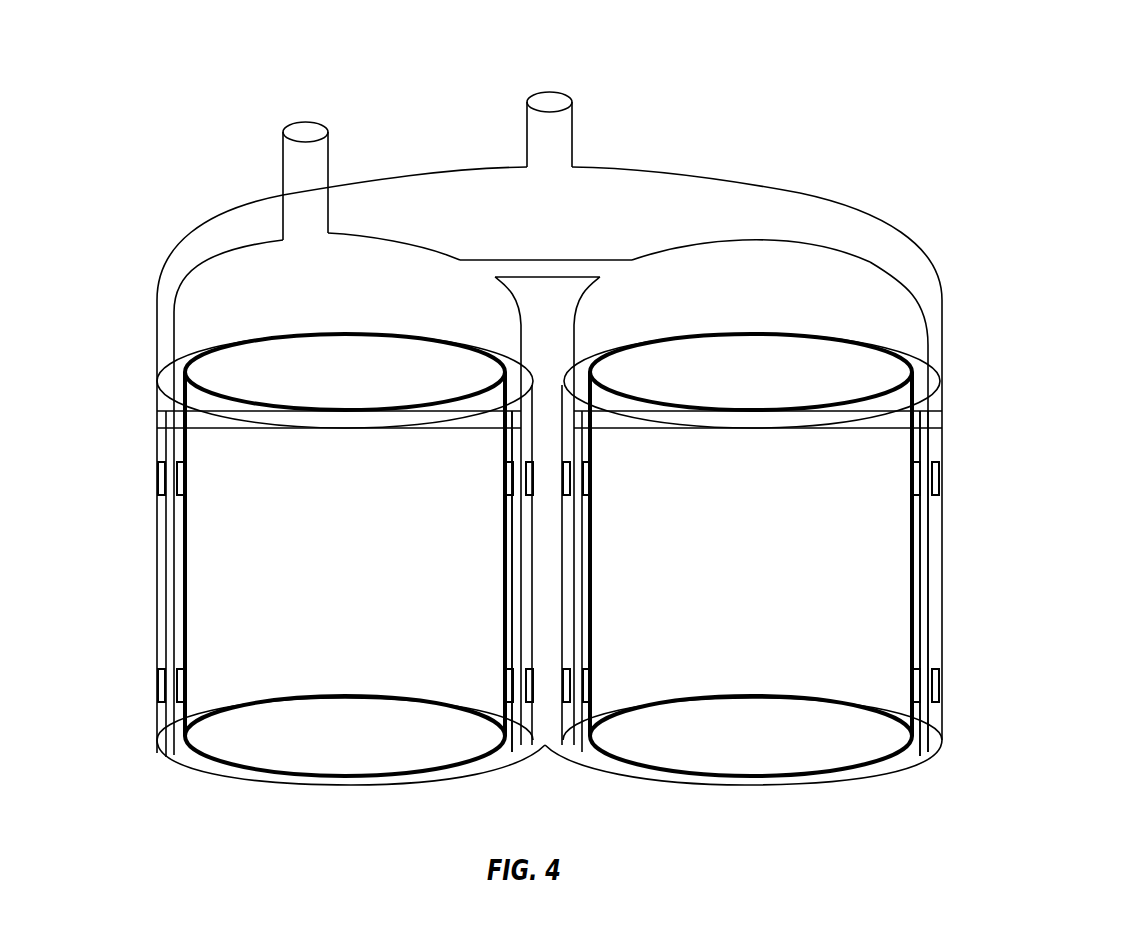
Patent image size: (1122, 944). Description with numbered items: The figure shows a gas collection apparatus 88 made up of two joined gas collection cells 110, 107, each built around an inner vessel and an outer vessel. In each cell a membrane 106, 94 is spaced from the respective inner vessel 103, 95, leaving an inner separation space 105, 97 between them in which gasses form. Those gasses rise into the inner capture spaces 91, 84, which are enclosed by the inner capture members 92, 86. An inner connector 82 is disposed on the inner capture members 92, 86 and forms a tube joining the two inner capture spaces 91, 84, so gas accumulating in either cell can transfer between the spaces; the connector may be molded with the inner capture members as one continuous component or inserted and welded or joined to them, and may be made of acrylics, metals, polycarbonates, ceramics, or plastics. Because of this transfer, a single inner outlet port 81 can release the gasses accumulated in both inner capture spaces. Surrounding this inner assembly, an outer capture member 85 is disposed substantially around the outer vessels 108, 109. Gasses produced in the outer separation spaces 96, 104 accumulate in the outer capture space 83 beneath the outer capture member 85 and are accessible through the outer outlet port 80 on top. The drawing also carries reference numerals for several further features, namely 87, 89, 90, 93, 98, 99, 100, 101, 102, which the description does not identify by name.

The outer outlet port 80 is at (553, 95).
The inner outlet port 81 is at (322, 124).
The inner connector 82 is at (558, 260).
The outer capture space 83 is at (710, 193).
The inner capture space 84 is at (780, 250).
The outer capture member 85 is at (807, 205).
The inner capture member 86 is at (880, 267).
The outer shell 87 is at (1028, 313).
The gas collection apparatus 88 is at (150, 58).
The layered side wall 89 is at (1027, 503).
The left inner cylinder 90 is at (313, 345).
The inner capture space 91 is at (447, 255).
The inner capture member 92 is at (343, 227).
The outer wall layer 93 is at (940, 525).
The membrane 94 is at (930, 565).
The inner vessel 95 is at (910, 577).
The outer separation space 96 is at (935, 615).
The inner separation space 97 is at (912, 637).
The inner spacer clip 98 is at (912, 483).
The outer spacer clip 99 is at (938, 487).
The right inner cylinder 100 is at (710, 345).
The central partition wall 101 is at (570, 377).
The central funnel passage 102 is at (518, 370).
The inner vessel 103 is at (503, 568).
The outer separation space 104 is at (527, 660).
The inner separation space 105 is at (508, 610).
The membrane 106 is at (510, 525).
The gas collection cell 107 is at (777, 755).
The outer vessel 108 is at (937, 753).
The outer vessel 109 is at (157, 740).
The gas collection cell 110 is at (275, 750).